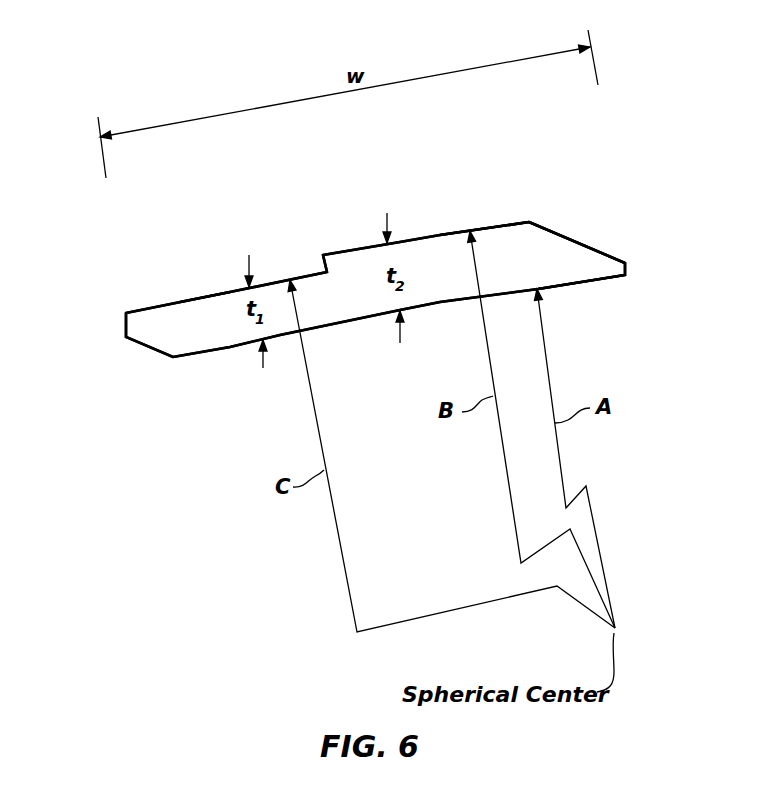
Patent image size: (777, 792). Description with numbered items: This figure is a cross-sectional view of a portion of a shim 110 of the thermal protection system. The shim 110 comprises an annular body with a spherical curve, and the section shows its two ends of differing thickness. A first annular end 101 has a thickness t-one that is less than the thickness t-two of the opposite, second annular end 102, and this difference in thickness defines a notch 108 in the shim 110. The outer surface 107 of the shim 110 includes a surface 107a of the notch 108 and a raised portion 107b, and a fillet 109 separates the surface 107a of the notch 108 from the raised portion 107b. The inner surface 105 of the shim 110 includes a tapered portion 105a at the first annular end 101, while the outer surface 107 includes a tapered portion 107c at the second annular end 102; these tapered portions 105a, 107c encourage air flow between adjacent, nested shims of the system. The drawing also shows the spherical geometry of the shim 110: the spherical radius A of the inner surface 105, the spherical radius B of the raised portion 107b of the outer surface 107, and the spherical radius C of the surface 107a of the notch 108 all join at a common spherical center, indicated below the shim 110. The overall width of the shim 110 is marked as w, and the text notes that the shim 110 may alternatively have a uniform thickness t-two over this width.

The first annular end 101 is at (90, 375).
The second annular end 102 is at (643, 200).
The inner surface 105 is at (230, 348).
The tapered portion 105a is at (148, 346).
The outer surface 107 is at (416, 240).
The surface of the notch 107a is at (163, 303).
The raised portion 107b is at (495, 226).
The tapered portion 107c is at (553, 227).
The notch 108 is at (222, 291).
The fillet 109 is at (327, 270).
The shim 110 is at (611, 212).